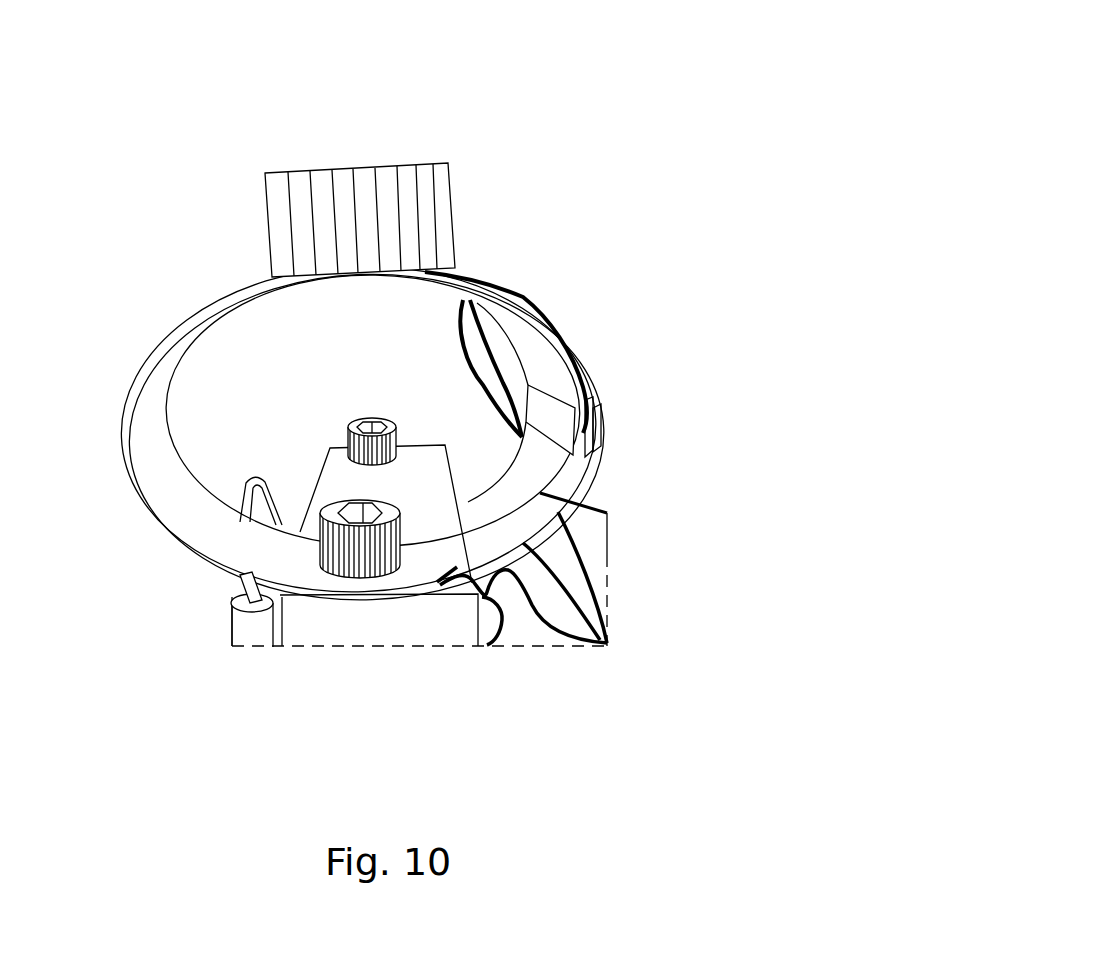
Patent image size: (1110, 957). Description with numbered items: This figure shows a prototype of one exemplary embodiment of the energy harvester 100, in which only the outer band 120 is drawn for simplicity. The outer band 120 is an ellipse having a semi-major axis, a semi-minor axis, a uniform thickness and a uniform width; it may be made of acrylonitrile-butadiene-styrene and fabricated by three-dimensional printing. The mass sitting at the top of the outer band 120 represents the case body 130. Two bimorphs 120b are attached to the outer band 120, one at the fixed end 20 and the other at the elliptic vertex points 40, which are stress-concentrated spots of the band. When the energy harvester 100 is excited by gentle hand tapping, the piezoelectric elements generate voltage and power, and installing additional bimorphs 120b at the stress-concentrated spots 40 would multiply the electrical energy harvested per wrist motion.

The energy harvester 100 is at (652, 100).
The case body 130 is at (440, 240).
The elliptic vertex points 40 is at (596, 376).
The bimorphs 120b is at (589, 403).
The outer band 120 is at (538, 493).
The fixed end 20 is at (383, 588).